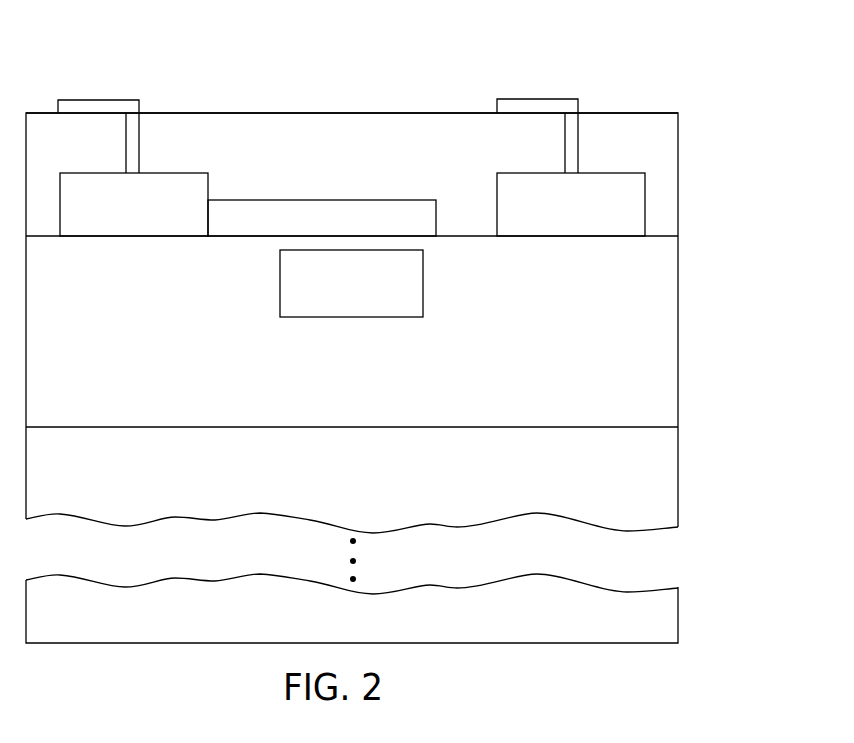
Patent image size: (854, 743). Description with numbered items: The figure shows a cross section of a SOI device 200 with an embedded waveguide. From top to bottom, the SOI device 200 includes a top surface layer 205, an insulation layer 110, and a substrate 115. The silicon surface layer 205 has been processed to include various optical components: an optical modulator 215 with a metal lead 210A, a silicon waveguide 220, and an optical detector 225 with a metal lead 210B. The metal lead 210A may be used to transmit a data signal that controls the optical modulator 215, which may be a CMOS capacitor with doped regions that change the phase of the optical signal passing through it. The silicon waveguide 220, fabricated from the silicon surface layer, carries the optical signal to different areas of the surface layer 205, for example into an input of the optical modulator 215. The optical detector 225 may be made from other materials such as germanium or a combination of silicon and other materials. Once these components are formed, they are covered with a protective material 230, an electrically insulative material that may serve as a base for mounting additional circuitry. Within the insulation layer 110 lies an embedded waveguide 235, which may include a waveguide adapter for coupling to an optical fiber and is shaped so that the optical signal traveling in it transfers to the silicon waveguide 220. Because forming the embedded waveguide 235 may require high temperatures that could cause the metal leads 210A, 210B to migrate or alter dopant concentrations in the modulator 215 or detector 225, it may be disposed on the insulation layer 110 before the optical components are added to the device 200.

The SOI device 200 is at (700, 89).
The surface layer 205 is at (685, 113).
The metal lead 210A is at (117, 100).
The metal lead 210B is at (550, 99).
The optical modulator 215 is at (187, 172).
The silicon waveguide 220 is at (385, 199).
The optical detector 225 is at (595, 172).
The protective material 230 is at (327, 113).
The embedded waveguide 235 is at (423, 295).
The insulation layer 110 is at (678, 333).
The substrate 115 is at (678, 465).